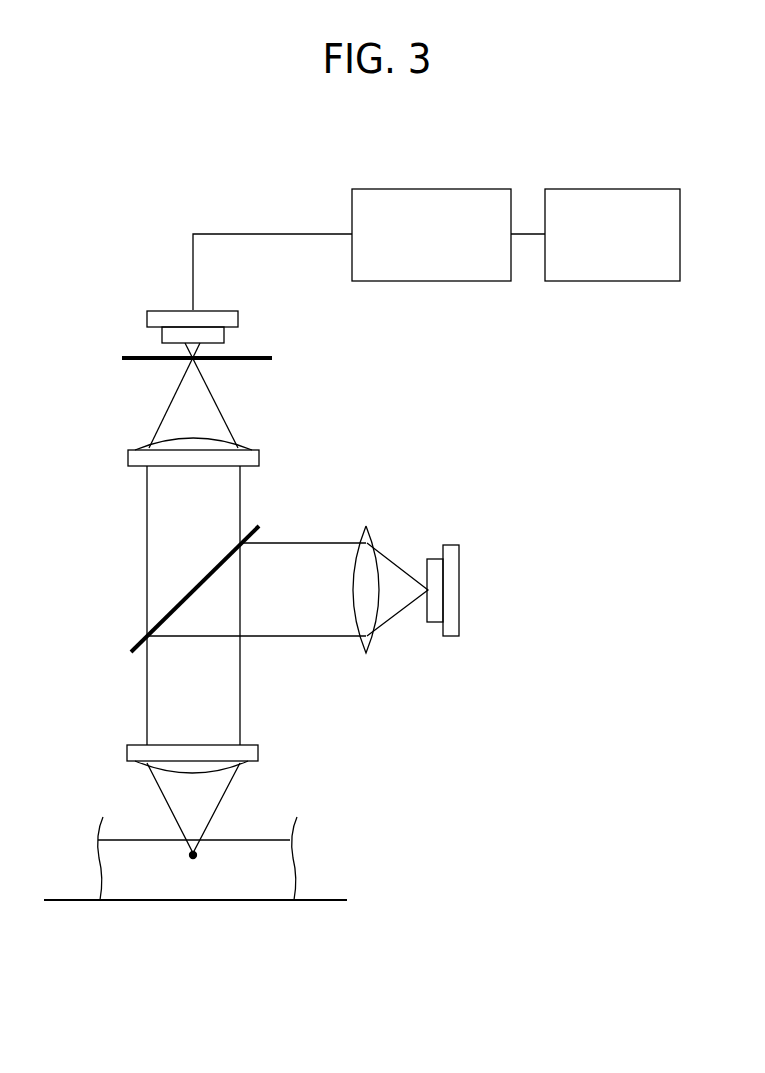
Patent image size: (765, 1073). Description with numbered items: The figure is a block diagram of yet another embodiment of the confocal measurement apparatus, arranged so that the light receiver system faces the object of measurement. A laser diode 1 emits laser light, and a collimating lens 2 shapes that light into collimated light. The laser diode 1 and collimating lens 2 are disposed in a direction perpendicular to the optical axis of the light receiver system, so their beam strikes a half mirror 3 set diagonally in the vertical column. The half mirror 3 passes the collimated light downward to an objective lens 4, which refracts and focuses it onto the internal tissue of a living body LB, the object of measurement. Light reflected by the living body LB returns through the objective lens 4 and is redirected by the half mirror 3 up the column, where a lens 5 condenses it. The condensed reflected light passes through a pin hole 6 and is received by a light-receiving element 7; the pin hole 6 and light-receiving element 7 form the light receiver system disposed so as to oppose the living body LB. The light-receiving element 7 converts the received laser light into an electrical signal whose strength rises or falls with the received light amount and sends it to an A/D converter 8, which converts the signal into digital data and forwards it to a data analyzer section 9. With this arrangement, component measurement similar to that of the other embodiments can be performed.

The laser diode 1 is at (451, 638).
The collimating lens 2 is at (369, 638).
The half mirror 3 is at (259, 523).
The objective lens 4 is at (259, 750).
The lens 5 is at (260, 456).
The pin hole 6 is at (275, 356).
The light-receiving element 7 is at (236, 318).
The A/D converter 8 is at (448, 187).
The data analyzer section 9 is at (622, 187).
The living body LB is at (287, 868).